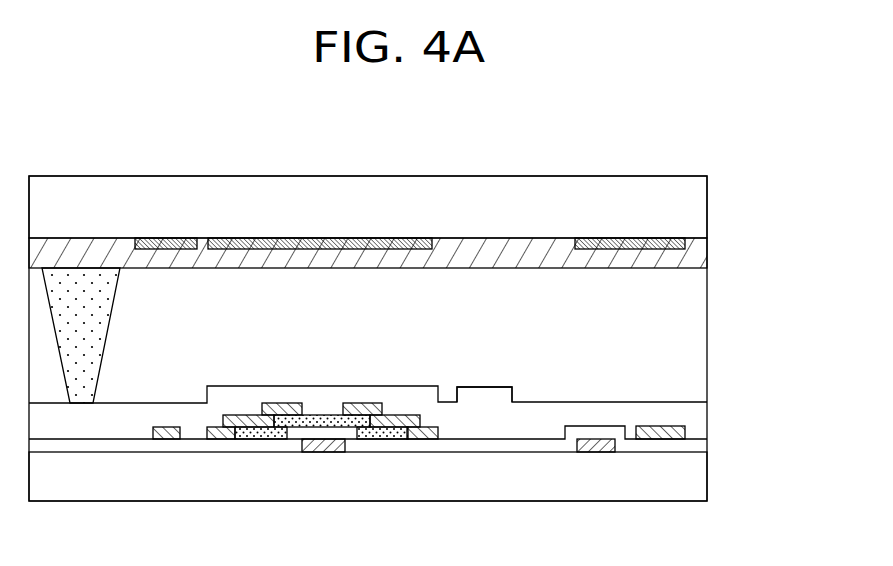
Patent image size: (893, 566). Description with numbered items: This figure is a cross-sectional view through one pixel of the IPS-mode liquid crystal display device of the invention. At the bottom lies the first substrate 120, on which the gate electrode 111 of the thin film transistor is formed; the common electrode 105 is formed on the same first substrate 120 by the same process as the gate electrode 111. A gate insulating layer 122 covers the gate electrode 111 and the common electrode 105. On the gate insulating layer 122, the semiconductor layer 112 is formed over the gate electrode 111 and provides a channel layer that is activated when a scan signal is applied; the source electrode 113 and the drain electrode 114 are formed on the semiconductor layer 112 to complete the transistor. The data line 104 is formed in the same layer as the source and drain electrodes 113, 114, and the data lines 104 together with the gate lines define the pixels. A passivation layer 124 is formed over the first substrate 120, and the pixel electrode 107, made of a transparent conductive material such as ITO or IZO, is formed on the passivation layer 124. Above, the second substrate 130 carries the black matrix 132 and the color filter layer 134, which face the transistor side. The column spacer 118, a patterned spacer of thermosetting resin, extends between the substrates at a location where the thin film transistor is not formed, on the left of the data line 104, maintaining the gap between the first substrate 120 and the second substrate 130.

The data line 104 is at (165, 440).
The common electrode 105 is at (590, 447).
The pixel electrode 107 is at (480, 397).
The gate electrode 111 is at (323, 447).
The semiconductor layer 112 is at (271, 440).
The source electrode 113 is at (224, 440).
The drain electrode 114 is at (425, 440).
The column spacer 118 is at (72, 278).
The first substrate 120 is at (693, 475).
The gate insulating layer 122 is at (693, 445).
The passivation layer 124 is at (693, 420).
The second substrate 130 is at (692, 212).
The black matrix 132 is at (254, 248).
The color filter layer 134 is at (492, 248).